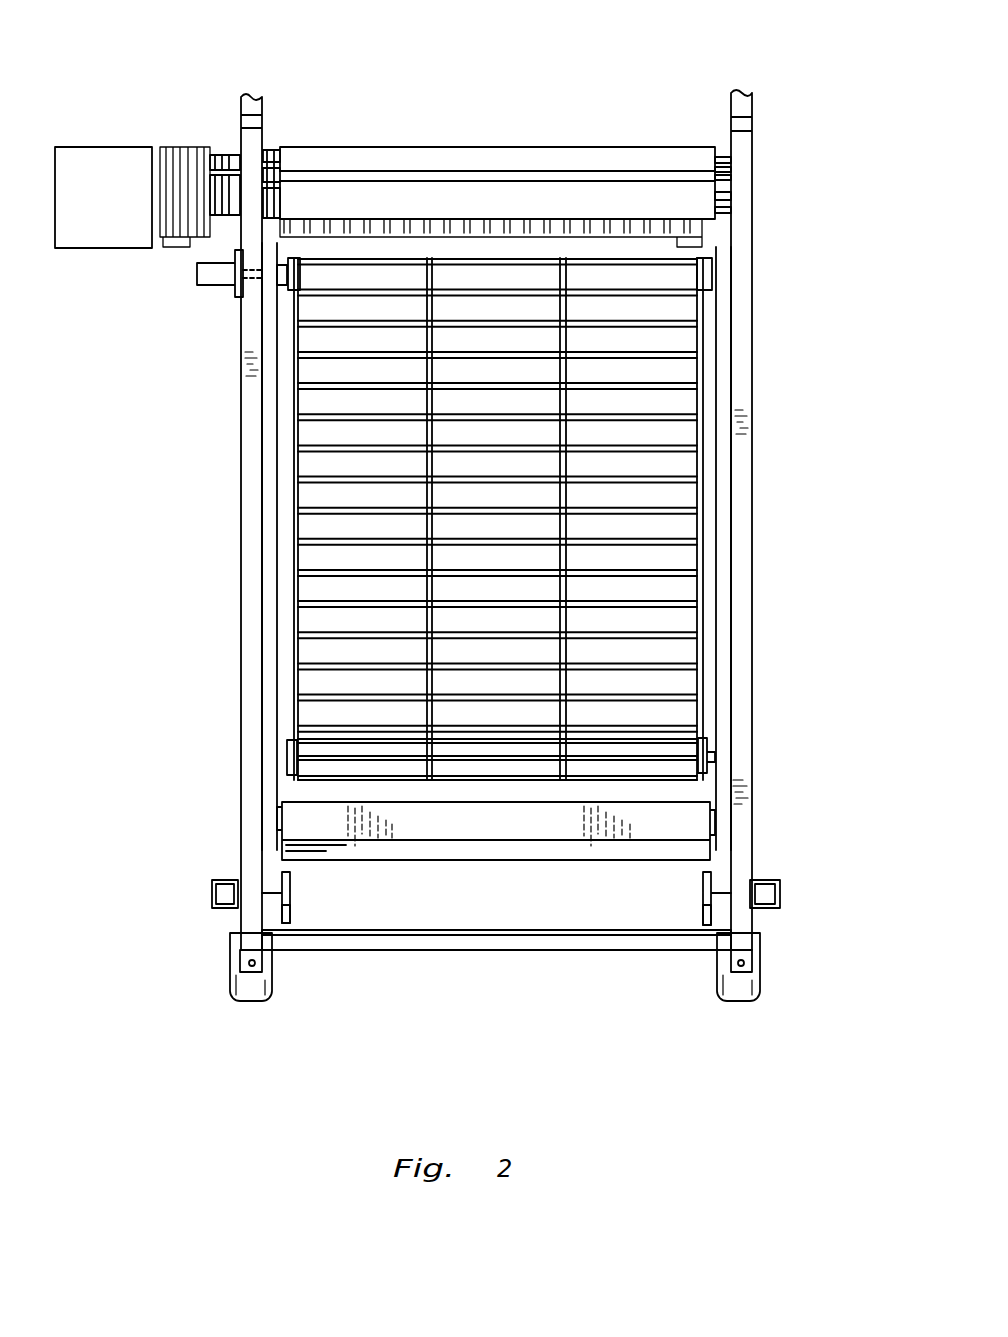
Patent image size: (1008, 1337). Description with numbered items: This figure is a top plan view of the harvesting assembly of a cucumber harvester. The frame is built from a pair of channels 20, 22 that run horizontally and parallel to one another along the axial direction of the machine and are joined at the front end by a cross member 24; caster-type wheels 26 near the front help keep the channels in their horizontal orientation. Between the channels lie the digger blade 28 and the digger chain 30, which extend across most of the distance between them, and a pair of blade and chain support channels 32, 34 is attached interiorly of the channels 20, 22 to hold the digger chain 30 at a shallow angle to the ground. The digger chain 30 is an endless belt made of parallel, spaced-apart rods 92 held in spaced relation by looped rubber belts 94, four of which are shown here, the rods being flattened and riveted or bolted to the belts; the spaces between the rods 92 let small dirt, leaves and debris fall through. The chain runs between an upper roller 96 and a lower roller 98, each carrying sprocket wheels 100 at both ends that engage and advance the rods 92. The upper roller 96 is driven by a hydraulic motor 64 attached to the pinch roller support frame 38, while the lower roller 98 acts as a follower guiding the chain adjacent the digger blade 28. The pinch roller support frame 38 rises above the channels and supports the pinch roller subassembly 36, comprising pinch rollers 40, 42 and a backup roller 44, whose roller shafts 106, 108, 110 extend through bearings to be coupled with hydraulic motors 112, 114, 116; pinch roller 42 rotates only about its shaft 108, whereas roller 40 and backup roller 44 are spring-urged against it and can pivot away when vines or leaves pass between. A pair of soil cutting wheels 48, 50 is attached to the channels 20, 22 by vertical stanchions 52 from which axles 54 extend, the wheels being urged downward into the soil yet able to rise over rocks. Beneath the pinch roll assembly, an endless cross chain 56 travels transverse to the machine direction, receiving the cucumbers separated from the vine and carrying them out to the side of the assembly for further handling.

The channel 20 is at (246, 790).
The channel 22 is at (746, 628).
The cross member 24 is at (592, 948).
The caster-type wheels 26 is at (245, 1000).
The digger blade 28 is at (392, 822).
The digger chain 30 is at (332, 507).
The blade and chain support channel 32 is at (268, 338).
The blade and chain support channel 34 is at (733, 376).
The pinch roller subassembly 36 is at (497, 126).
The pinch roller support frame 38 is at (746, 145).
The pinch roller 40 is at (543, 197).
The pinch roller 42 is at (567, 180).
The backup roller 44 is at (600, 156).
The soil cutting wheel 48 is at (282, 908).
The soil cutting wheel 50 is at (713, 908).
The vertical stanchion 52 is at (212, 893).
The axle 54 is at (275, 888).
The cross chain 56 is at (172, 147).
The hydraulic motor 64 is at (198, 274).
The rods 92 is at (313, 443).
The rubber belts 94 is at (432, 360).
The upper roller 96 is at (292, 262).
The lower roller 98 is at (289, 748).
The sprocket wheels 100 is at (302, 262).
The roller shaft 106 is at (723, 208).
The roller shaft 108 is at (725, 186).
The roller shaft 110 is at (723, 167).
The hydraulic motor 112 is at (241, 195).
The hydraulic motor 114 is at (218, 150).
The hydraulic motor 116 is at (228, 158).